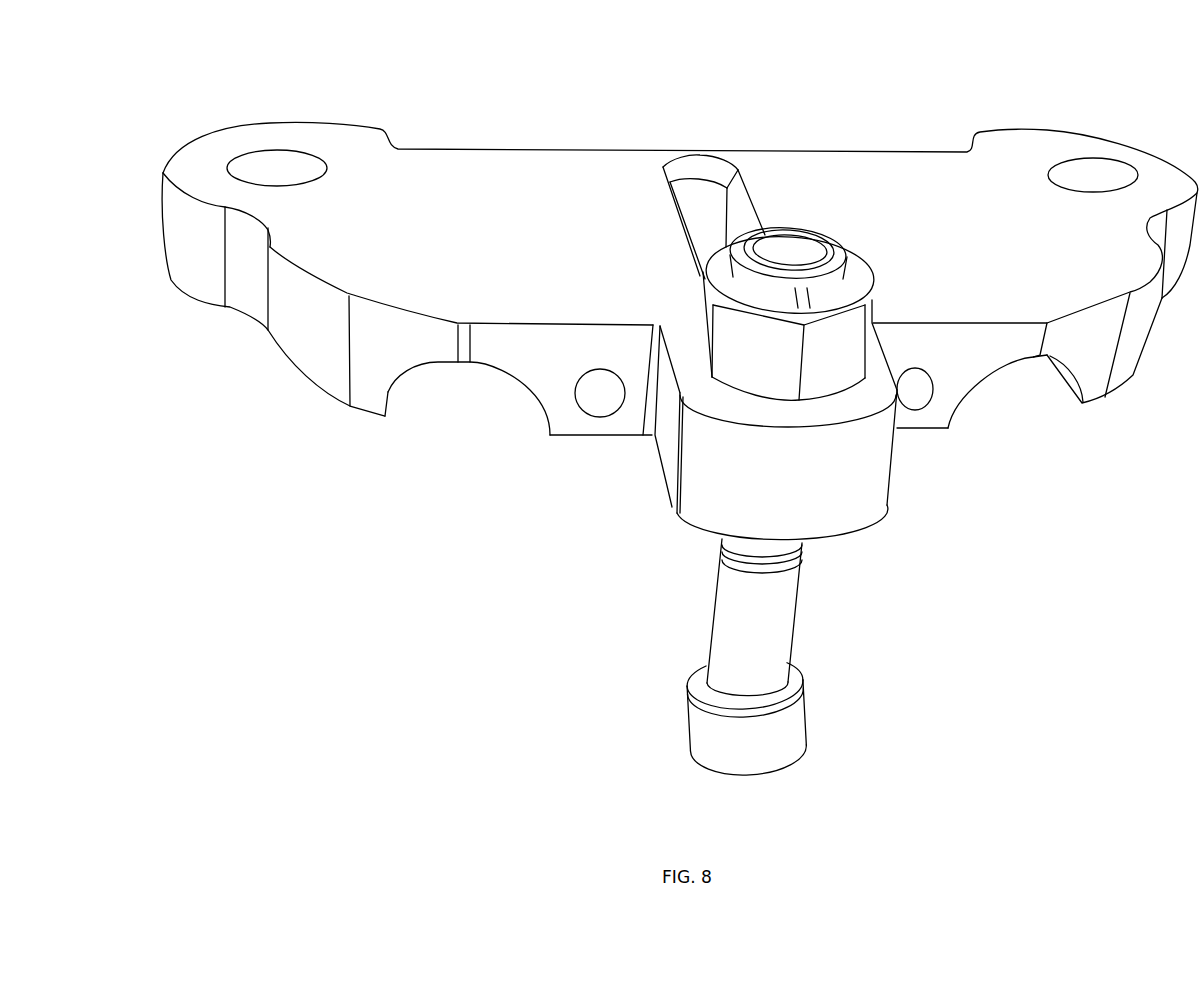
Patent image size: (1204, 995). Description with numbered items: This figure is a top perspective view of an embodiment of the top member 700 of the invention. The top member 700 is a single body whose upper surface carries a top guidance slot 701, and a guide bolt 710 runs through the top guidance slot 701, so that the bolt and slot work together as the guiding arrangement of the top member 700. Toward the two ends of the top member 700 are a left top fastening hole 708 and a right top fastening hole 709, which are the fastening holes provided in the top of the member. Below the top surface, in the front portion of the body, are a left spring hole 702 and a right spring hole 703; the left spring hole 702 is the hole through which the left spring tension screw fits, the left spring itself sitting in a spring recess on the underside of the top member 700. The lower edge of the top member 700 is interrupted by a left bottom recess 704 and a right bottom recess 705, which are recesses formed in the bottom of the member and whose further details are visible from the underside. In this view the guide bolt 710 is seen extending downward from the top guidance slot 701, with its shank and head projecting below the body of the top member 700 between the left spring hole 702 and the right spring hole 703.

The top member 700 is at (187, 112).
The top guidance slot 701 is at (695, 207).
The left spring hole 702 is at (598, 398).
The right spring hole 703 is at (908, 388).
The left bottom recess 704 is at (393, 387).
The right bottom recess 705 is at (1060, 375).
The left top fastening hole 708 is at (270, 168).
The right top fastening hole 709 is at (1090, 177).
The guide bolt 710 is at (755, 630).